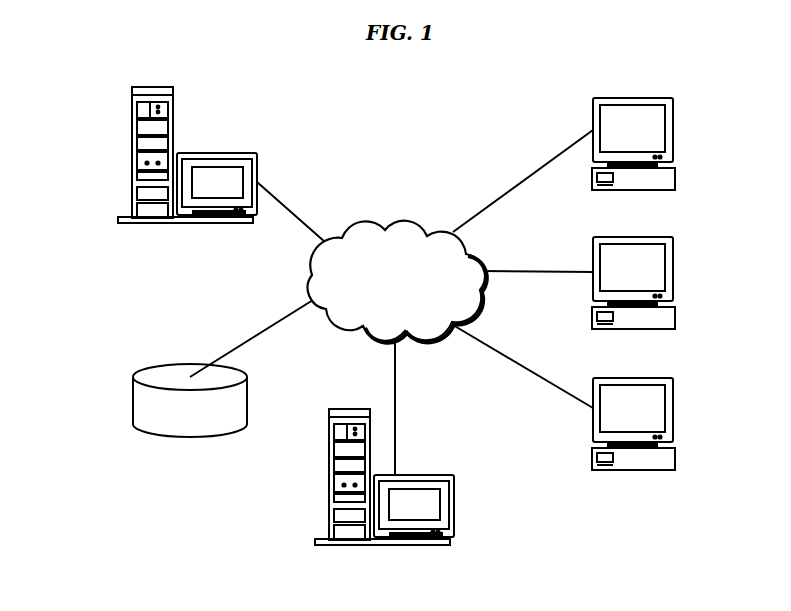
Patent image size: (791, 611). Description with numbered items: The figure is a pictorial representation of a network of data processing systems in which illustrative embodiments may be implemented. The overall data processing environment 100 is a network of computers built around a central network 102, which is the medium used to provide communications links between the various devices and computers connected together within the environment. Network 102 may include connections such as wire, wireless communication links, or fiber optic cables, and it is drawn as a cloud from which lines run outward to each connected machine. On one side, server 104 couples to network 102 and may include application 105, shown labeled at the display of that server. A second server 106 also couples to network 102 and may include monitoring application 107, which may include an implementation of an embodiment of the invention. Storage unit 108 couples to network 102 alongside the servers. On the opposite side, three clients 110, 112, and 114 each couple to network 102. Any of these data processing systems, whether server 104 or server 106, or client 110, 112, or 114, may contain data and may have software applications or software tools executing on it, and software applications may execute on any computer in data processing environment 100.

The data processing environment 100 is at (80, 109).
The network 102 is at (397, 282).
The server 104 is at (197, 166).
The application 105 is at (205, 167).
The server 106 is at (439, 487).
The monitoring application 107 is at (440, 503).
The storage unit 108 is at (190, 400).
The client 110 is at (633, 291).
The client 112 is at (633, 432).
The client 114 is at (633, 152).